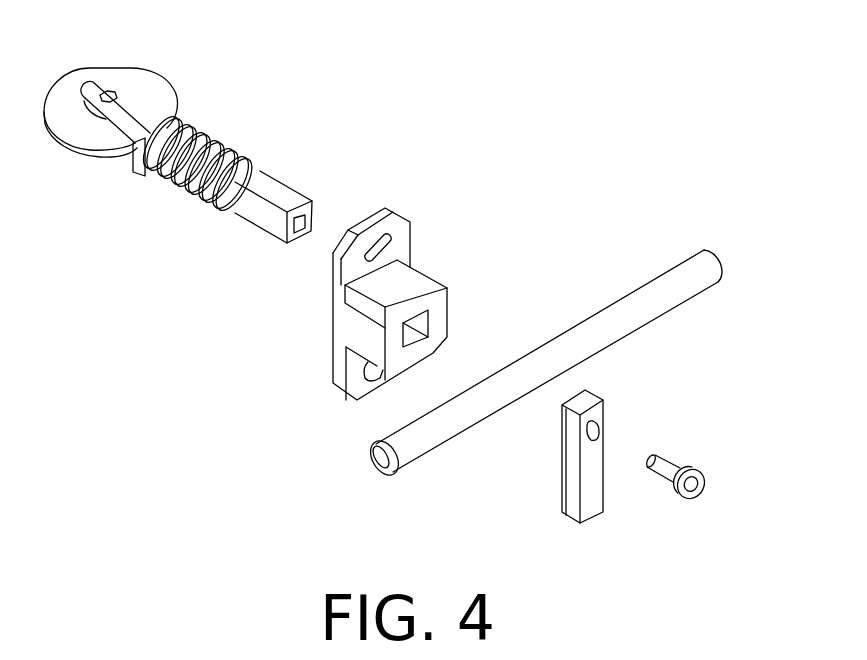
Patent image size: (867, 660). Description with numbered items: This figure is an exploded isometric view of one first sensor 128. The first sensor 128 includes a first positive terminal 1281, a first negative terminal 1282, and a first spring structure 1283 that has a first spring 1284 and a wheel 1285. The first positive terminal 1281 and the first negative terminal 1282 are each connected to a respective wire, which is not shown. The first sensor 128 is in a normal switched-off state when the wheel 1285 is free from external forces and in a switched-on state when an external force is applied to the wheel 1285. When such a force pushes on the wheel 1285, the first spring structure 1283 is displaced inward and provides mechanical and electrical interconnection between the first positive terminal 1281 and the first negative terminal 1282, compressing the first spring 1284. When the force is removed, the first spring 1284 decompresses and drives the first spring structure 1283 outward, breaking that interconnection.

The first sensor 128 is at (453, 47).
The first positive terminal 1281 is at (405, 280).
The first negative terminal 1282 is at (632, 310).
The first spring structure 1283 is at (88, 68).
The first spring 1284 is at (217, 137).
The wheel 1285 is at (147, 93).